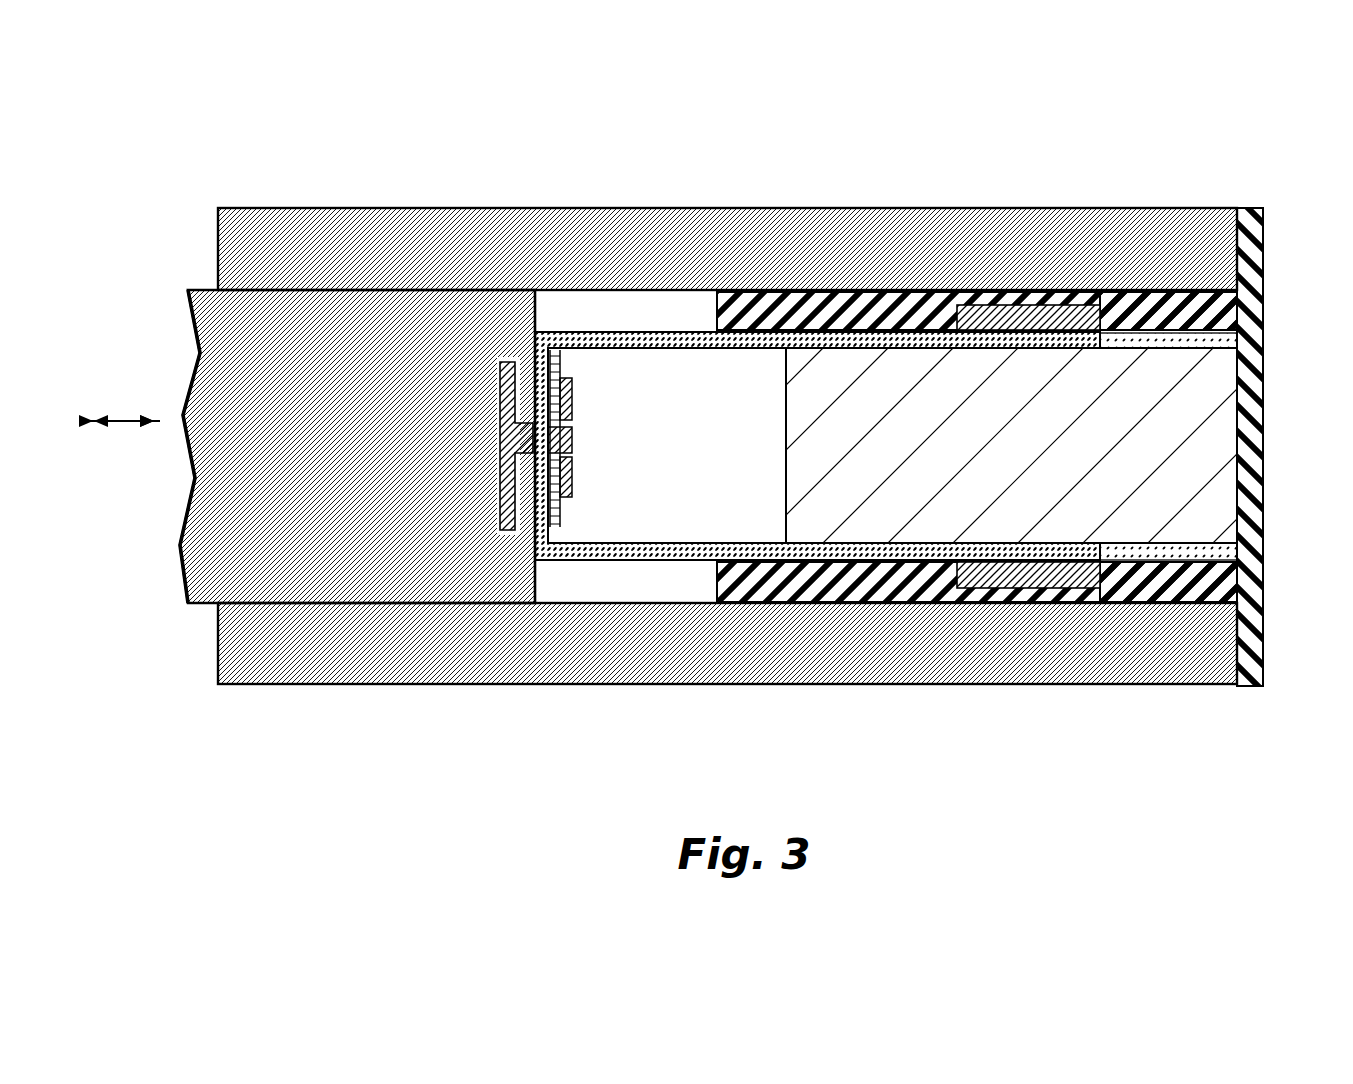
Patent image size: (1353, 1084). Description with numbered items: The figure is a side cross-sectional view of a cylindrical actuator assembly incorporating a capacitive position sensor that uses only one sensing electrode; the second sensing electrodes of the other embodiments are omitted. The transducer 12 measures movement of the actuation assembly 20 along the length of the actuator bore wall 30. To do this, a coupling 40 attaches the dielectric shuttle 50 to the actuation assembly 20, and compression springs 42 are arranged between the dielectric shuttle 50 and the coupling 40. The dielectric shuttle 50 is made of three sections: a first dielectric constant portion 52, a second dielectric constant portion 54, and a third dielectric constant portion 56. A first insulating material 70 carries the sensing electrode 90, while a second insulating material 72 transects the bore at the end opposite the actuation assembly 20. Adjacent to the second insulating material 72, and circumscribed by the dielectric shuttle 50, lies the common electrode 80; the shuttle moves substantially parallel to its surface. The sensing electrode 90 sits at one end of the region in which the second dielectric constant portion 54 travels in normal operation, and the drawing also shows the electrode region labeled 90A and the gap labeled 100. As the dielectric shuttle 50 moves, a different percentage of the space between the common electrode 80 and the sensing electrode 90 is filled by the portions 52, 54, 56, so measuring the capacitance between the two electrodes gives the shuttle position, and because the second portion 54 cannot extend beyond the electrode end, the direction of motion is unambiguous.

The transducer 12 is at (1212, 521).
The actuation assembly 20 is at (333, 330).
The actuator bore wall 30 is at (460, 228).
The coupling 40 is at (572, 378).
The compression springs 42 is at (570, 400).
The dielectric shuttle 50 is at (769, 539).
The first dielectric constant portion 52 is at (612, 332).
The second dielectric constant portion 54 is at (1090, 333).
The third dielectric constant portion 56 is at (1152, 330).
The first insulating material 70 is at (1240, 292).
The second insulating material 72 is at (1248, 466).
The common electrode 80 is at (979, 455).
The sensing electrode 90 is at (1027, 578).
The recess 90A is at (1025, 318).
The gap 100 is at (716, 322).